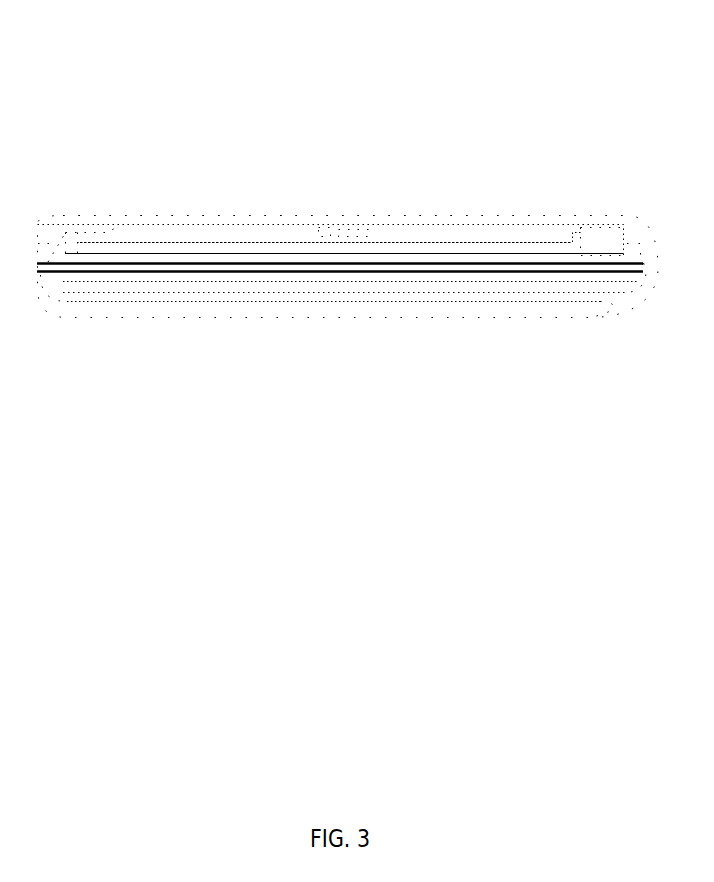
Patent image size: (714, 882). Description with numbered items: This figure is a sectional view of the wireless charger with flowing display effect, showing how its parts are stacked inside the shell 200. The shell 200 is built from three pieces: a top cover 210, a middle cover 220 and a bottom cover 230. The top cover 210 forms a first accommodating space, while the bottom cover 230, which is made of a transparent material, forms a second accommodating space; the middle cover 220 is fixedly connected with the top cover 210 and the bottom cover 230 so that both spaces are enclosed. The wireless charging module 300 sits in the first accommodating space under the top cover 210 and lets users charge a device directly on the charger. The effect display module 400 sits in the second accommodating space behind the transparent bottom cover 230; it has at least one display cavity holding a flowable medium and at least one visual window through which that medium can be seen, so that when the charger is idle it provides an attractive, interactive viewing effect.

The shell 200 is at (303, 557).
The top cover 210 is at (510, 215).
The middle cover 220 is at (530, 268).
The bottom cover 230 is at (575, 308).
The wireless charging module 300 is at (263, 247).
The effect display module 400 is at (272, 295).